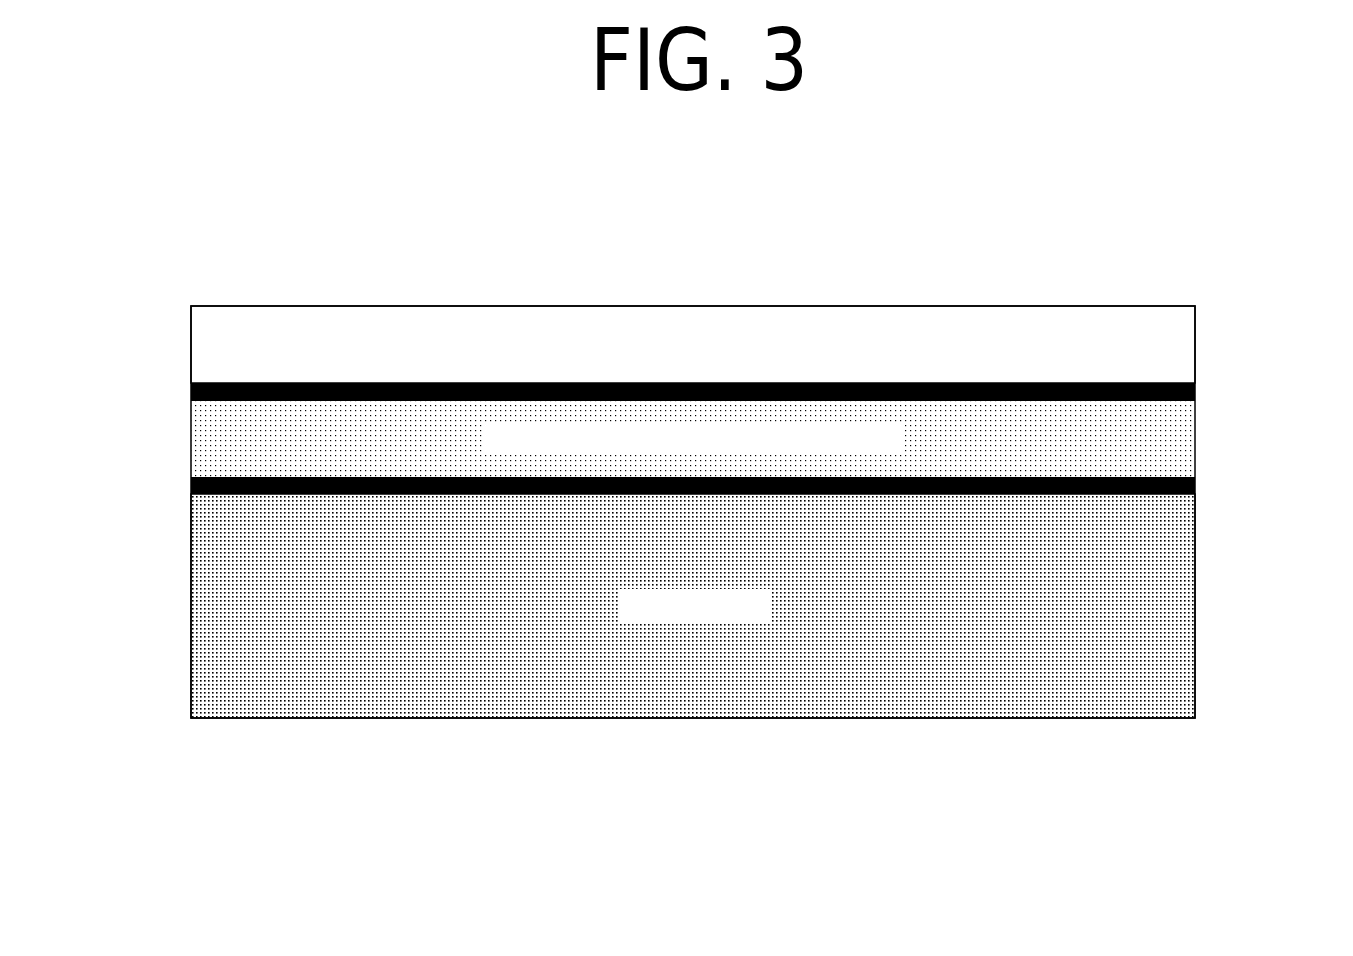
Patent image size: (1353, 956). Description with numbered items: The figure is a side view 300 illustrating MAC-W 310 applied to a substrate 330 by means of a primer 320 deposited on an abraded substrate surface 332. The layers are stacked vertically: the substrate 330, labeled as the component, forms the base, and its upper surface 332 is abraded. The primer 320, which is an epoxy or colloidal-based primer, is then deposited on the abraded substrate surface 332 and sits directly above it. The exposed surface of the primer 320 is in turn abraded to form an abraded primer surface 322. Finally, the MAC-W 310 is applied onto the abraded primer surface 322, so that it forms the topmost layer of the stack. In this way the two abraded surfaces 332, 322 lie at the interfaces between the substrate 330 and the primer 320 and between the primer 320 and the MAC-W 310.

The side view 300 is at (152, 222).
The MAC-W 310 is at (1196, 342).
The abraded primer surface 322 is at (1196, 390).
The primer 320 is at (1196, 445).
The abraded substrate surface 332 is at (1196, 483).
The substrate 330 is at (1196, 608).